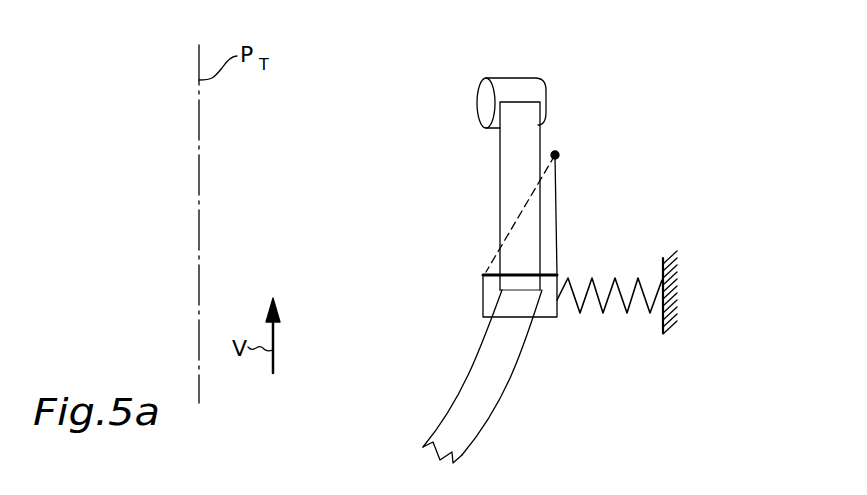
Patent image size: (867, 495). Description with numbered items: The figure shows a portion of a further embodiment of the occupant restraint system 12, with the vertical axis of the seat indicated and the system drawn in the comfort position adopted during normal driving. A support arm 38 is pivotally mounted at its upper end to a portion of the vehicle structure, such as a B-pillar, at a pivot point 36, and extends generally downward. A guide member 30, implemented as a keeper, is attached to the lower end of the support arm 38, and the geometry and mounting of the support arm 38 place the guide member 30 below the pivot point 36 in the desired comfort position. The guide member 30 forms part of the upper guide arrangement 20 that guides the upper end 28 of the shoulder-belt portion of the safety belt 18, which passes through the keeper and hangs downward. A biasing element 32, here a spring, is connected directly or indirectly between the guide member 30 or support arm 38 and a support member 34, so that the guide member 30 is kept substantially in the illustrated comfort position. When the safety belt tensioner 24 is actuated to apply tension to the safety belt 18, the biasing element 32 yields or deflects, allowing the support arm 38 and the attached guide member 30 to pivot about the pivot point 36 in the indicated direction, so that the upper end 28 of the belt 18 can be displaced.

The occupant restraint system 12 is at (356, 167).
The safety belt 18 is at (475, 408).
The upper guide arrangement 20 is at (582, 249).
The safety belt tensioner 24 is at (485, 98).
The upper end of the shoulder-belt portion 28 is at (536, 359).
The guide member 30 is at (491, 287).
The biasing element 32 is at (595, 308).
The support member 34 is at (668, 305).
The pivot point 36 is at (558, 154).
The support arm 38 is at (497, 265).